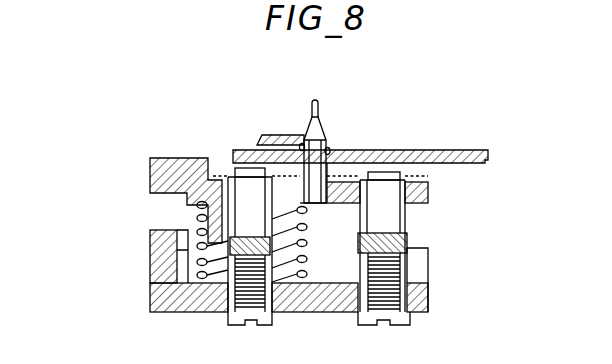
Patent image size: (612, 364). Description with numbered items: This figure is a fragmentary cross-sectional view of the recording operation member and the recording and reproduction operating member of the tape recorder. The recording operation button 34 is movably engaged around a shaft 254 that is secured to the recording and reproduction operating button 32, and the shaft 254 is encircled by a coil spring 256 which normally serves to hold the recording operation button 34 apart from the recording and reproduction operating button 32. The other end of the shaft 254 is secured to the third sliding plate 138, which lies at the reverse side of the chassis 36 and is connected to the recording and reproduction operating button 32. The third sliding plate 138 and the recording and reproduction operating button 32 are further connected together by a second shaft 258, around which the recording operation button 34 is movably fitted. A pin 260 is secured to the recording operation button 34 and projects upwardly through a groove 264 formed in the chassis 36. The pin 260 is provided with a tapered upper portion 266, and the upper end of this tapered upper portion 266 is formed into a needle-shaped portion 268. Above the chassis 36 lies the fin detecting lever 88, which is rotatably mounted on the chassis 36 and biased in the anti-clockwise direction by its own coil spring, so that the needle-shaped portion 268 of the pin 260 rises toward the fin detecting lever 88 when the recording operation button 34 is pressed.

The recording and reproduction operating button 32 is at (148, 284).
The recording operation button 34 is at (150, 172).
The chassis 36 is at (449, 152).
The fin detecting lever 88 is at (257, 139).
The third sliding plate 138 is at (430, 177).
The shaft 254 is at (247, 207).
The coil spring 256 is at (150, 254).
The second shaft 258 is at (407, 222).
The pin 260 is at (299, 141).
The groove 264 is at (330, 150).
The tapered upper portion 266 is at (327, 134).
The needle-shaped portion 268 is at (309, 107).